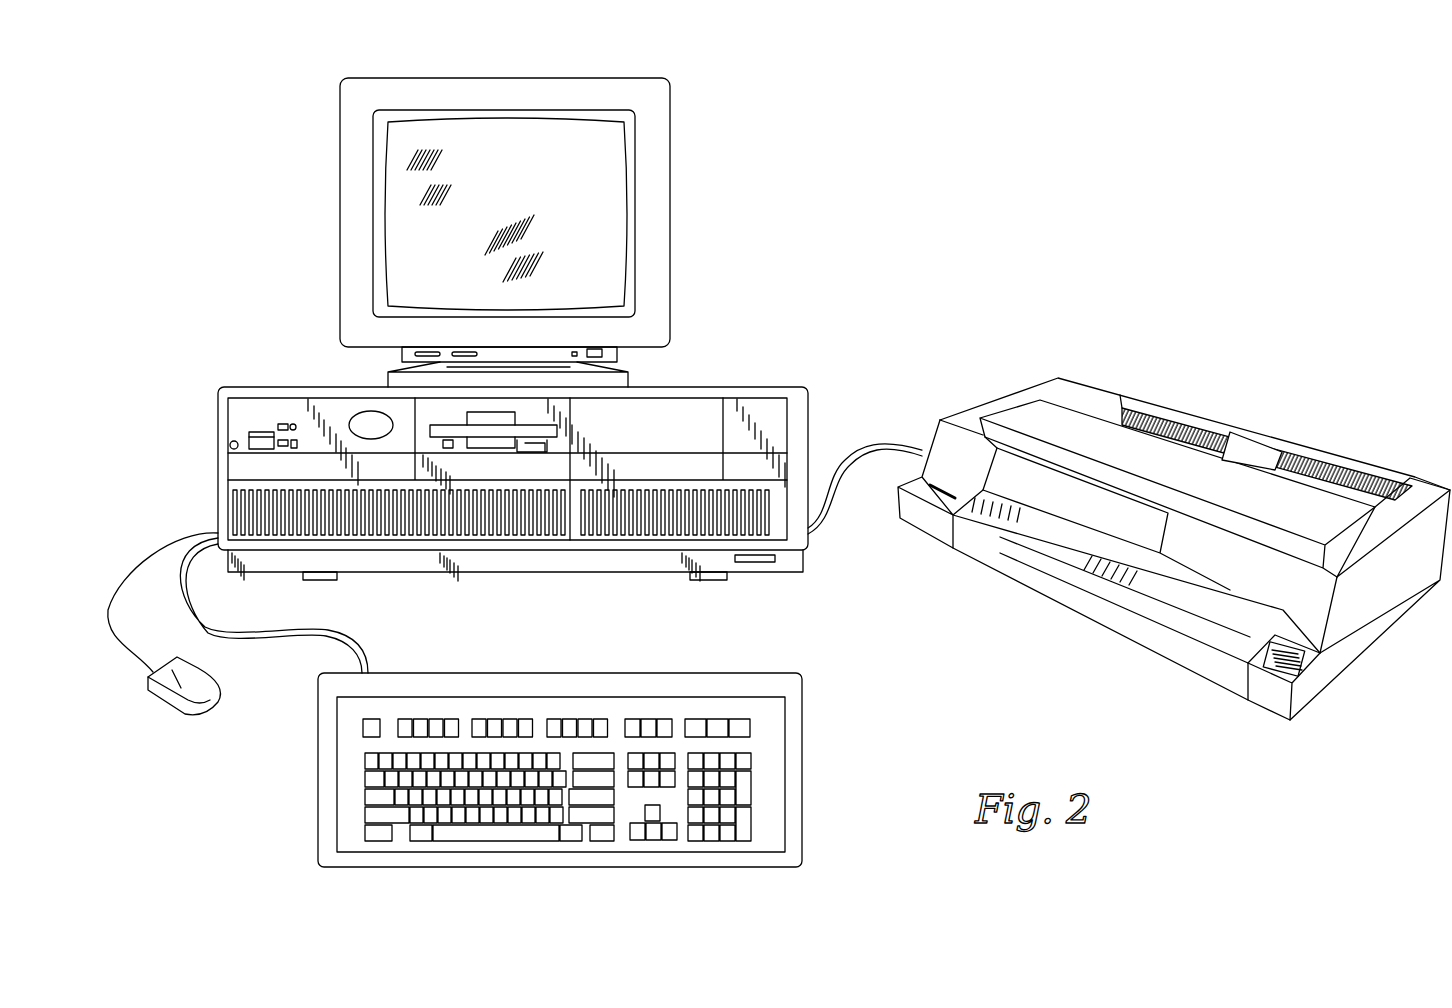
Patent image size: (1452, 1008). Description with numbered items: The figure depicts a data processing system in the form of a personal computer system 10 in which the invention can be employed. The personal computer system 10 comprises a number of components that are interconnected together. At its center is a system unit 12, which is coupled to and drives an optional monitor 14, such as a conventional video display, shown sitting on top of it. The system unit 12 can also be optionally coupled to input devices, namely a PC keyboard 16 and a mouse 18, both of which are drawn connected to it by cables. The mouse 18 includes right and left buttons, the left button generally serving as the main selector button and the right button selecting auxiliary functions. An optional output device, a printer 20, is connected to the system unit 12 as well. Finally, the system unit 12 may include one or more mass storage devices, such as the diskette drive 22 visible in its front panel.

The personal computer system 10 is at (886, 196).
The system unit 12 is at (570, 459).
The monitor 14 is at (684, 240).
The PC keyboard 16 is at (673, 662).
The mouse 18 is at (167, 693).
The printer 20 is at (997, 390).
The diskette drive 22 is at (500, 440).